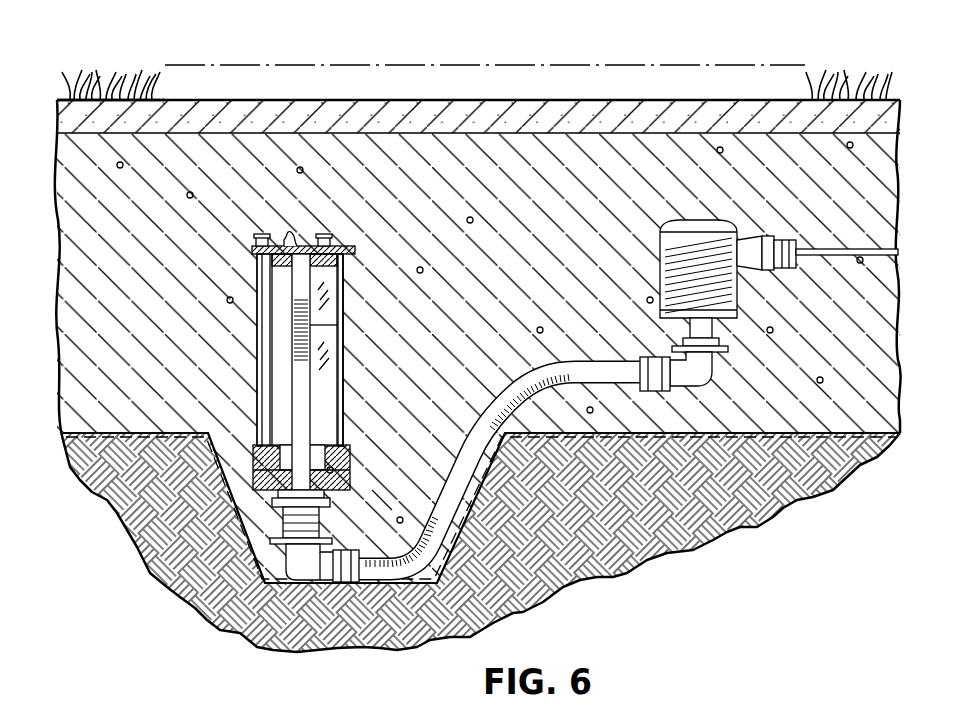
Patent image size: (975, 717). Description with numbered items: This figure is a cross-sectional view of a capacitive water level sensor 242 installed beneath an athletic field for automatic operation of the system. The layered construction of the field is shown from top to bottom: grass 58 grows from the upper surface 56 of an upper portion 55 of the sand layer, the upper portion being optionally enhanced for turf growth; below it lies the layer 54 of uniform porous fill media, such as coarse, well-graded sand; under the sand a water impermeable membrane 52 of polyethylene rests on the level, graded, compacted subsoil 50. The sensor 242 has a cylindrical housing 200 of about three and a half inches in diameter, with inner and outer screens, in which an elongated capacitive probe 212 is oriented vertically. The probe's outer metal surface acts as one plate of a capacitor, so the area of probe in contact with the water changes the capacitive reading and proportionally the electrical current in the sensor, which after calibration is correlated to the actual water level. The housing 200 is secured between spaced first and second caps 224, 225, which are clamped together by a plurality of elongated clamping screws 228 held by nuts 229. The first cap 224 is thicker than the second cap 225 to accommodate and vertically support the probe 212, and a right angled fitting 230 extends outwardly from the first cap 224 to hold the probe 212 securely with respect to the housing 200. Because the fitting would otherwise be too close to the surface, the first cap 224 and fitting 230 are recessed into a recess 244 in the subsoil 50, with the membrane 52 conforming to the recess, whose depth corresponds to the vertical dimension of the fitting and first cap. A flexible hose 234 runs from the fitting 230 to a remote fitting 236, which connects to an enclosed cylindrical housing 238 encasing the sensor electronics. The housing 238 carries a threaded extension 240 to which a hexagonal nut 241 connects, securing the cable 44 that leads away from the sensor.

The cable 44 is at (838, 256).
The compacted subsoil 50 is at (163, 536).
The water impermeable membrane 52 is at (105, 432).
The layer of uniform porous fill media 54 is at (477, 200).
The upper portion 55 is at (250, 114).
The upper surface 56 is at (48, 84).
The grass 58 is at (148, 95).
The cylindrical housing 200 is at (308, 444).
The capacitive probe 212 is at (340, 328).
The first cap 224 is at (346, 452).
The second cap 225 is at (252, 250).
The clamping screws 228 is at (326, 236).
The nuts 229 is at (290, 245).
The right angled fitting 230 is at (315, 566).
The flexible hose 234 is at (506, 385).
The remote fitting 236 is at (671, 358).
The cylindrical housing 238 is at (660, 262).
The threaded extension 240 is at (673, 247).
The hexagonal nut 241 is at (779, 240).
The sensor 242 is at (367, 271).
The backfill 244 is at (406, 488).